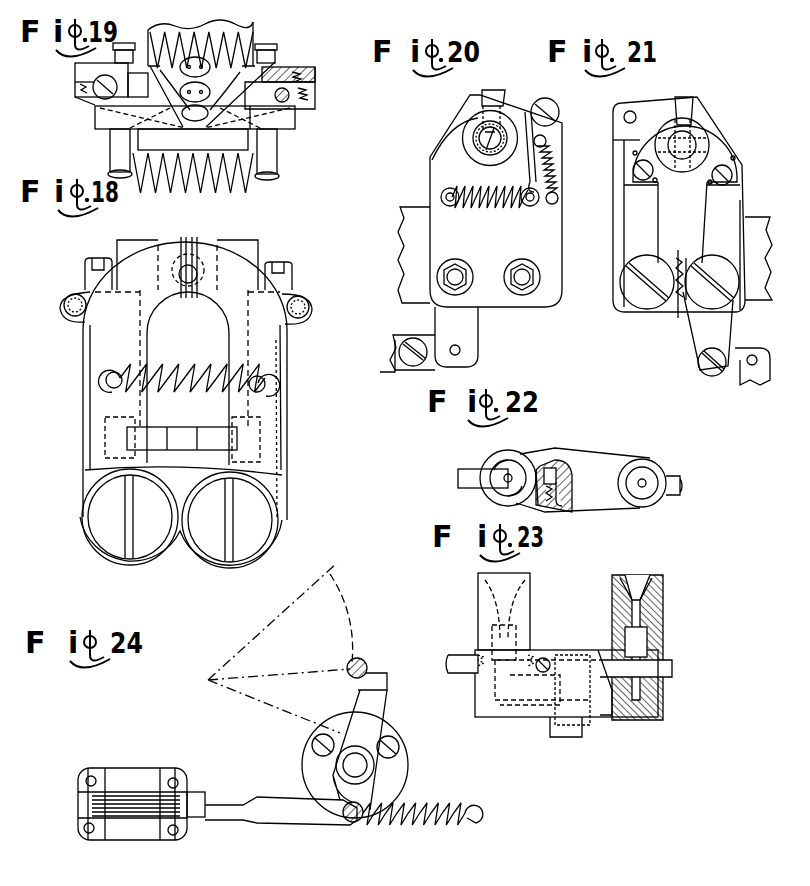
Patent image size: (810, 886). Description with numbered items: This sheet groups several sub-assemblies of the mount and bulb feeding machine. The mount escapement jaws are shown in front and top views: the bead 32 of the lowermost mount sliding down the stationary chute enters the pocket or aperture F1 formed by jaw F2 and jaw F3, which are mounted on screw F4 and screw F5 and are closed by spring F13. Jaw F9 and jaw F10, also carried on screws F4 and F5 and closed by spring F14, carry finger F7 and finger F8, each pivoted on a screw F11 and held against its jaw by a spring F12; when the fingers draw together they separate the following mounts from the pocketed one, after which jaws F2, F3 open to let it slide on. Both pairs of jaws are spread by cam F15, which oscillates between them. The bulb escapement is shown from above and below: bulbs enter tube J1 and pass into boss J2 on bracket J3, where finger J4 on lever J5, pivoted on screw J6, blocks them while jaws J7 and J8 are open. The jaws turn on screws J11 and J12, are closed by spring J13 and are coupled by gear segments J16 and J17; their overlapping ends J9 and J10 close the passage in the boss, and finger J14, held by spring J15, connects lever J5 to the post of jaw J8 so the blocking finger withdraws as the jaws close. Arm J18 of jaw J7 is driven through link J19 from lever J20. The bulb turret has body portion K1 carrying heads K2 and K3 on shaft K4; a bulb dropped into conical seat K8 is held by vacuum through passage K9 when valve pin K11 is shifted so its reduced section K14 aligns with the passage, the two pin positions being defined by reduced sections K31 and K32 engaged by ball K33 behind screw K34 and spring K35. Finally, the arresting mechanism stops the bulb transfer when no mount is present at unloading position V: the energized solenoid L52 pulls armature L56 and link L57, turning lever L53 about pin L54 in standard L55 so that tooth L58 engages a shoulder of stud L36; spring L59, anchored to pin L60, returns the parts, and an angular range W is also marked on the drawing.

In FIG. 19, the aperture F1 is at (262, 72).
In FIG. 19, the jaw F2 is at (100, 130).
In FIG. 18, the jaw F2 is at (84, 364).
In FIG. 19, the jaw F3 is at (296, 128).
In FIG. 18, the jaw F3 is at (283, 362).
In FIG. 18, the screw F4 is at (95, 540).
In FIG. 19, the screw F5 is at (280, 165).
In FIG. 18, the screw F5 is at (284, 537).
In FIG. 19, the finger F7 is at (75, 70).
In FIG. 18, the finger F7 is at (127, 240).
In FIG. 19, the finger F8 is at (316, 76).
In FIG. 18, the finger F8 is at (256, 245).
In FIG. 19, the jaw F9 is at (90, 95).
In FIG. 18, the jaw F9 is at (84, 335).
In FIG. 19, the jaw F10 is at (316, 105).
In FIG. 18, the jaw F10 is at (289, 335).
In FIG. 19, the screw F11 is at (100, 97).
In FIG. 19, the spring F12 is at (80, 86).
In FIG. 19, the spring F13 is at (202, 180).
In FIG. 18, the spring F13 is at (188, 371).
In FIG. 19, the spring F14 is at (250, 50).
In FIG. 19, the cam F15 is at (238, 24).
In FIG. 18, the cam F15 is at (190, 451).
In FIG. 19, the bead 32 is at (170, 89).
In FIG. 18, the bead 32 is at (194, 292).
In FIG. 20, the tube J1 is at (466, 148).
In FIG. 21, the tube J1 is at (694, 122).
In FIG. 20, the boss J2 is at (455, 133).
In FIG. 20, the bracket J3 is at (560, 262).
In FIG. 20, the finger J4 is at (484, 152).
In FIG. 20, the lever J5 is at (507, 95).
In FIG. 20, the screw J6 is at (560, 113).
In FIG. 21, the jaw J7 is at (741, 204).
In FIG. 21, the jaw J8 is at (622, 212).
In FIG. 21, the jaw end J9 is at (733, 142).
In FIG. 21, the jaw end J10 is at (619, 139).
In FIG. 21, the screw J11 is at (740, 283).
In FIG. 21, the screw J12 is at (634, 304).
In FIG. 20, the spring J13 is at (488, 209).
In FIG. 20, the finger J14 is at (526, 180).
In FIG. 20, the spring J15 is at (557, 168).
In FIG. 21, the gear segment J16 is at (680, 320).
In FIG. 21, the gear segment J17 is at (670, 306).
In FIG. 20, the arm J18 is at (479, 326).
In FIG. 21, the arm J18 is at (740, 330).
In FIG. 20, the link J19 is at (413, 338).
In FIG. 21, the link J19 is at (720, 374).
In FIG. 20, the lever J20 is at (384, 368).
In FIG. 22, the body portion K1 is at (632, 508).
In FIG. 23, the body portion K1 is at (507, 718).
In FIG. 22, the head K2 is at (509, 457).
In FIG. 23, the head K2 is at (531, 606).
In FIG. 22, the head K3 is at (662, 467).
In FIG. 23, the head K3 is at (665, 605).
In FIG. 23, the shaft K4 is at (551, 730).
In FIG. 23, the conical seat K8 is at (642, 580).
In FIG. 23, the passage K9 is at (648, 642).
In FIG. 22, the valve pin K11 is at (680, 490).
In FIG. 23, the valve pin K11 is at (673, 668).
In FIG. 23, the reduced section K14 is at (660, 695).
In FIG. 22, the reduced section K31 is at (560, 462).
In FIG. 22, the reduced section K32 is at (549, 465).
In FIG. 22, the ball K33 is at (572, 508).
In FIG. 22, the screw K34 is at (552, 505).
In FIG. 22, the spring K35 is at (533, 500).
In FIG. 24, the angle of swing W is at (330, 580).
In FIG. 24, the unloading position V is at (348, 740).
In FIG. 24, the stud L36 is at (365, 662).
In FIG. 24, the solenoid L52 is at (128, 768).
In FIG. 24, the lever L53 is at (330, 793).
In FIG. 24, the pin L54 is at (373, 773).
In FIG. 24, the standard L55 is at (302, 764).
In FIG. 24, the armature L56 is at (202, 793).
In FIG. 24, the link L57 is at (305, 826).
In FIG. 24, the tooth L58 is at (370, 676).
In FIG. 24, the spring L59 is at (452, 826).
In FIG. 24, the pin L60 is at (352, 823).